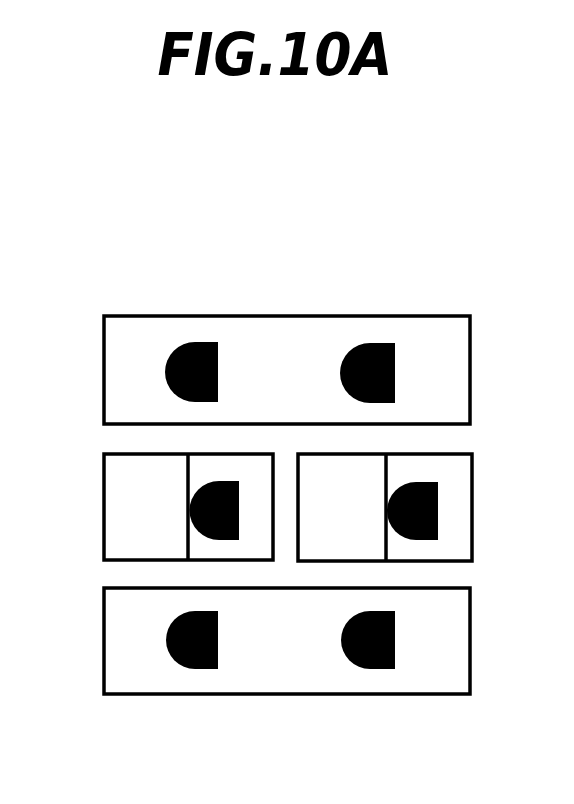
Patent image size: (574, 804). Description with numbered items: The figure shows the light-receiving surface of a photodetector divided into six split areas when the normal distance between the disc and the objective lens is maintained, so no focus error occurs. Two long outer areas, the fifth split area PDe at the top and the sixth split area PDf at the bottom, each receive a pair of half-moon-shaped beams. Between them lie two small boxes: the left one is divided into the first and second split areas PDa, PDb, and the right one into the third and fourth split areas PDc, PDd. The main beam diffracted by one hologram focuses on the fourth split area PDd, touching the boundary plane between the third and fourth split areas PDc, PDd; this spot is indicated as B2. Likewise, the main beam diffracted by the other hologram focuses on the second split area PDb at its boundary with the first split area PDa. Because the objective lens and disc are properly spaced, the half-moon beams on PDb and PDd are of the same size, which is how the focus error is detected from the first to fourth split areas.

The first split area PDa is at (165, 456).
The second split area PDb is at (198, 481).
The third split area PDc is at (440, 533).
The fourth split area PDd is at (452, 472).
The fifth split area PDe is at (300, 343).
The sixth split area PDf is at (282, 660).
The main beam spot B2 is at (345, 537).